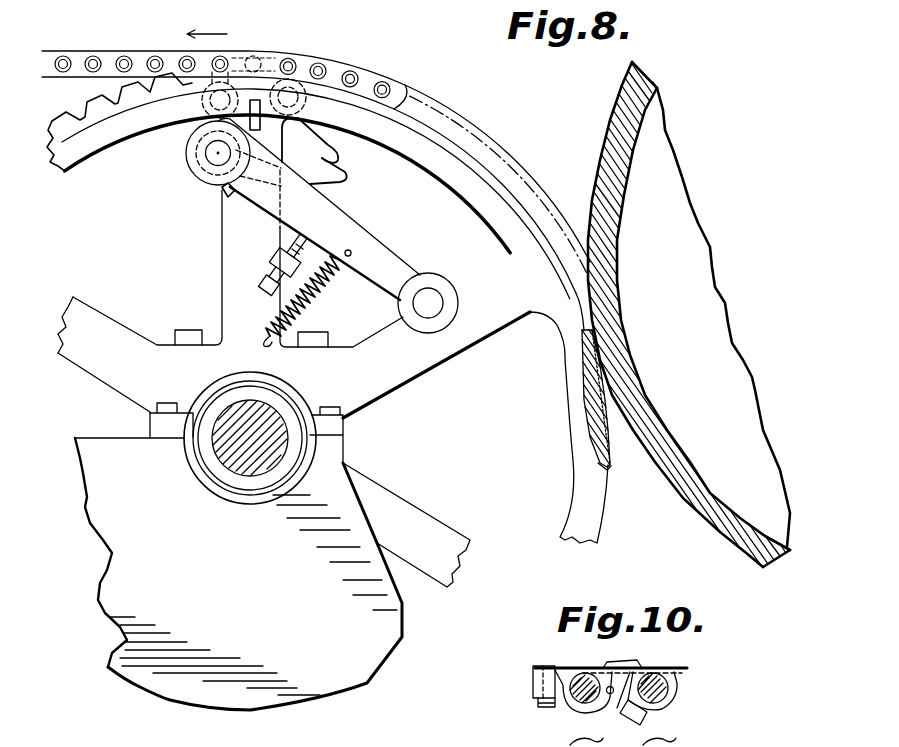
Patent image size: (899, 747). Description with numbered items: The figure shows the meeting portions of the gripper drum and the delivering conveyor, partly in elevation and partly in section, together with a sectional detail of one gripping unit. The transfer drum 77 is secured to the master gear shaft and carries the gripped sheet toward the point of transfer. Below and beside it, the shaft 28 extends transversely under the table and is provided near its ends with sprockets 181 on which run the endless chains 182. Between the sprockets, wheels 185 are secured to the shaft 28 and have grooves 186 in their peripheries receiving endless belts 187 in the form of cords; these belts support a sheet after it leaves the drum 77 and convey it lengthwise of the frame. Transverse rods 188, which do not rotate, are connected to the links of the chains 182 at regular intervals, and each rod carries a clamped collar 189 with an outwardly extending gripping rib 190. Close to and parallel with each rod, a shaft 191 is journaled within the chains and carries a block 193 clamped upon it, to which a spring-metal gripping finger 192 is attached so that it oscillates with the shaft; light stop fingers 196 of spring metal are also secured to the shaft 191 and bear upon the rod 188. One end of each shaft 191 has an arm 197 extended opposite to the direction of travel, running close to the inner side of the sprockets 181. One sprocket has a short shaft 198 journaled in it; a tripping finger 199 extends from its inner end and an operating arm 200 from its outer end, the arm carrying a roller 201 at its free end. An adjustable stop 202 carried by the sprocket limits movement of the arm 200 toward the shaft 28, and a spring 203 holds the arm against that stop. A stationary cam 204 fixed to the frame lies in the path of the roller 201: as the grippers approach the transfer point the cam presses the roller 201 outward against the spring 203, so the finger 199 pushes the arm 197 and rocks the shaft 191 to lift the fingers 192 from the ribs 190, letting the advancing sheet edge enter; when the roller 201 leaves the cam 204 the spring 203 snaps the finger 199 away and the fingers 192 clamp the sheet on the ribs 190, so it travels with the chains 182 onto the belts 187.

In FIG. 8, the shaft 28 is at (250, 470).
In FIG. 8, the transfer drum 77 is at (707, 497).
In FIG. 8, the sprockets 181 is at (487, 282).
In FIG. 8, the endless chains 182 is at (138, 57).
In FIG. 8, the wheels 185 is at (573, 448).
In FIG. 8, the grooves 186 is at (600, 383).
In FIG. 8, the endless belts 187 is at (610, 458).
In FIG. 8, the transverse rods 188 is at (318, 62).
In FIG. 10, the transverse rods 188 is at (682, 692).
In FIG. 10, the collar 189 is at (682, 707).
In FIG. 10, the gripping rib 190 is at (687, 677).
In FIG. 10, the shaft 191 is at (580, 678).
In FIG. 10, the gripping finger 192 is at (612, 661).
In FIG. 10, the block 193 is at (533, 680).
In FIG. 10, the stop fingers 196 is at (617, 708).
In FIG. 8, the arm 197 is at (322, 145).
In FIG. 8, the short shaft 198 is at (213, 158).
In FIG. 8, the tripping finger 199 is at (343, 177).
In FIG. 8, the operating arm 200 is at (390, 258).
In FIG. 8, the roller 201 is at (432, 333).
In FIG. 8, the adjustable stop 202 is at (300, 237).
In FIG. 8, the spring 203 is at (320, 298).
In FIG. 8, the stationary cam 204 is at (294, 450).